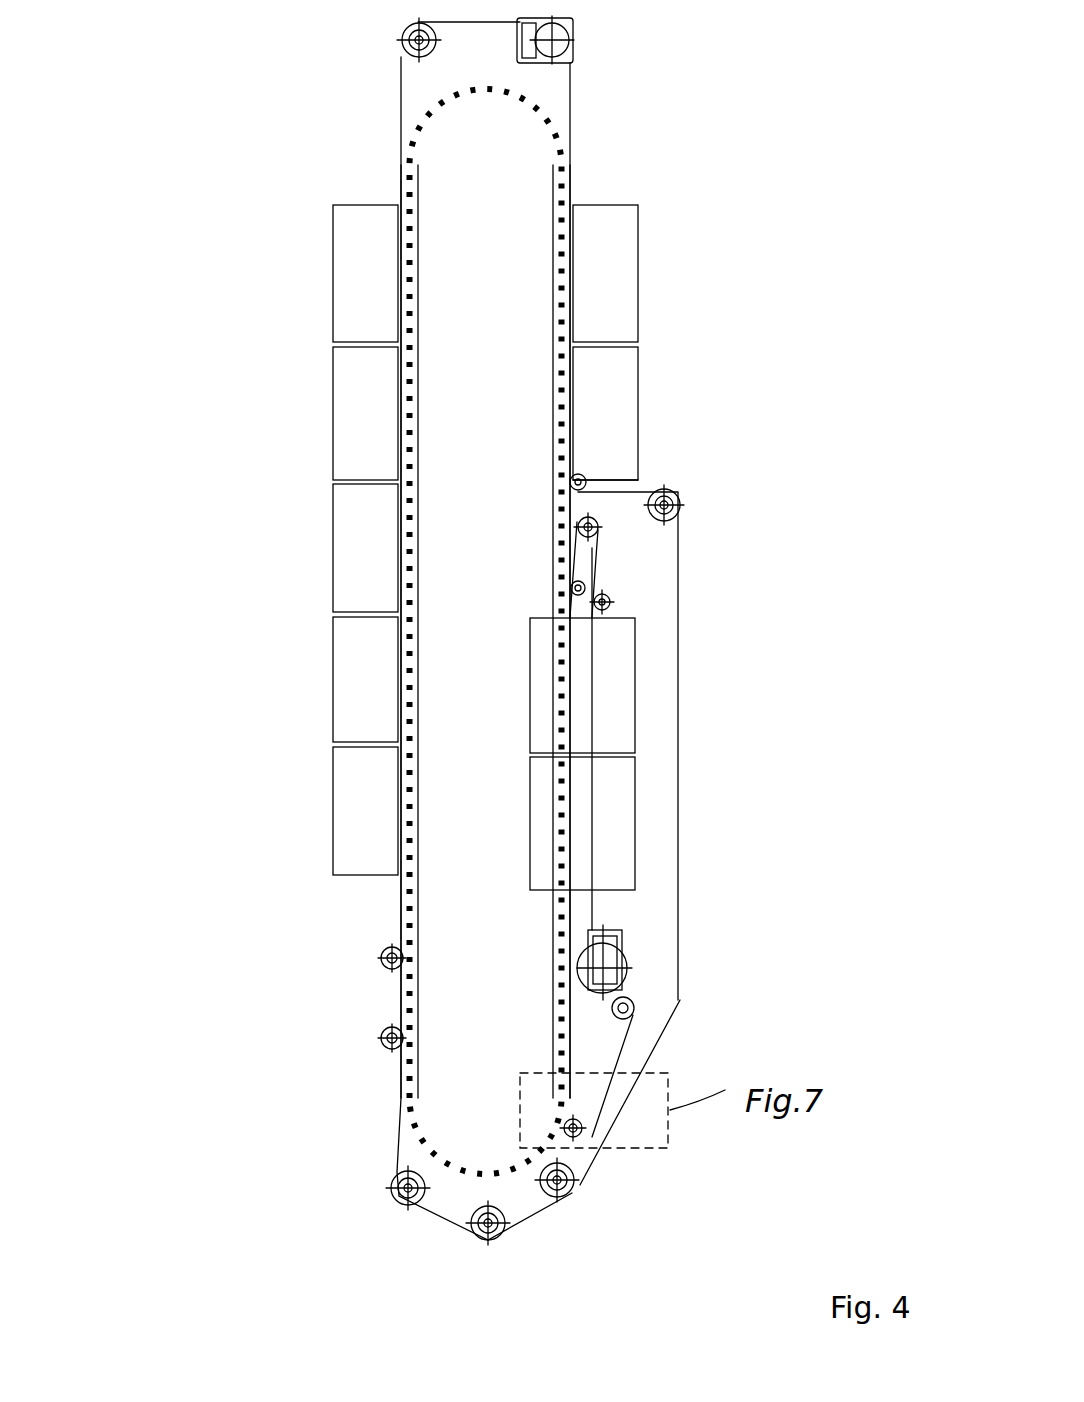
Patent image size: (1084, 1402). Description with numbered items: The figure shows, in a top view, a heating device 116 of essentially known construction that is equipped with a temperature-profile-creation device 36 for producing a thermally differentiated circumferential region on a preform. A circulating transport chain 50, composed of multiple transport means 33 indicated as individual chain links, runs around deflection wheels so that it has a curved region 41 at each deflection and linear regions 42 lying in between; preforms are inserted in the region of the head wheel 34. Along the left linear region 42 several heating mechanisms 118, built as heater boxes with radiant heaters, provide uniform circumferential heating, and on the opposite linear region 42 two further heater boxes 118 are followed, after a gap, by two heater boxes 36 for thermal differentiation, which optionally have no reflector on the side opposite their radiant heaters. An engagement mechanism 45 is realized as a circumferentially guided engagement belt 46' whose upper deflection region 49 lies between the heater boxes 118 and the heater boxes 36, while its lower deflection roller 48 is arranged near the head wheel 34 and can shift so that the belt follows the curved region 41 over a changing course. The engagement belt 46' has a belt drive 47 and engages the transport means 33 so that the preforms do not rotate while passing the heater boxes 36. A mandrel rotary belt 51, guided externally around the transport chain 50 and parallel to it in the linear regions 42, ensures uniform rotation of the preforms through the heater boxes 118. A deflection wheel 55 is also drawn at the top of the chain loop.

The heating device 116 is at (205, 155).
The drive sprocket 55 is at (425, 100).
The curved region 41 is at (553, 90).
The linear regions 42 is at (583, 190).
The heating mechanisms 118 is at (345, 285).
The engagement mechanism 45 is at (808, 447).
The upper deflection region 49 is at (590, 515).
The engagement belt 46' is at (682, 564).
The temperature-profile-creation device 36 is at (625, 690).
The belt drive 47 is at (640, 950).
The mandrel rotary belt 51 is at (680, 965).
The lower deflection roller 48 is at (638, 1148).
The transport means 33 is at (410, 1000).
The head wheel 34 is at (460, 1110).
The transport chain 50 is at (417, 1157).